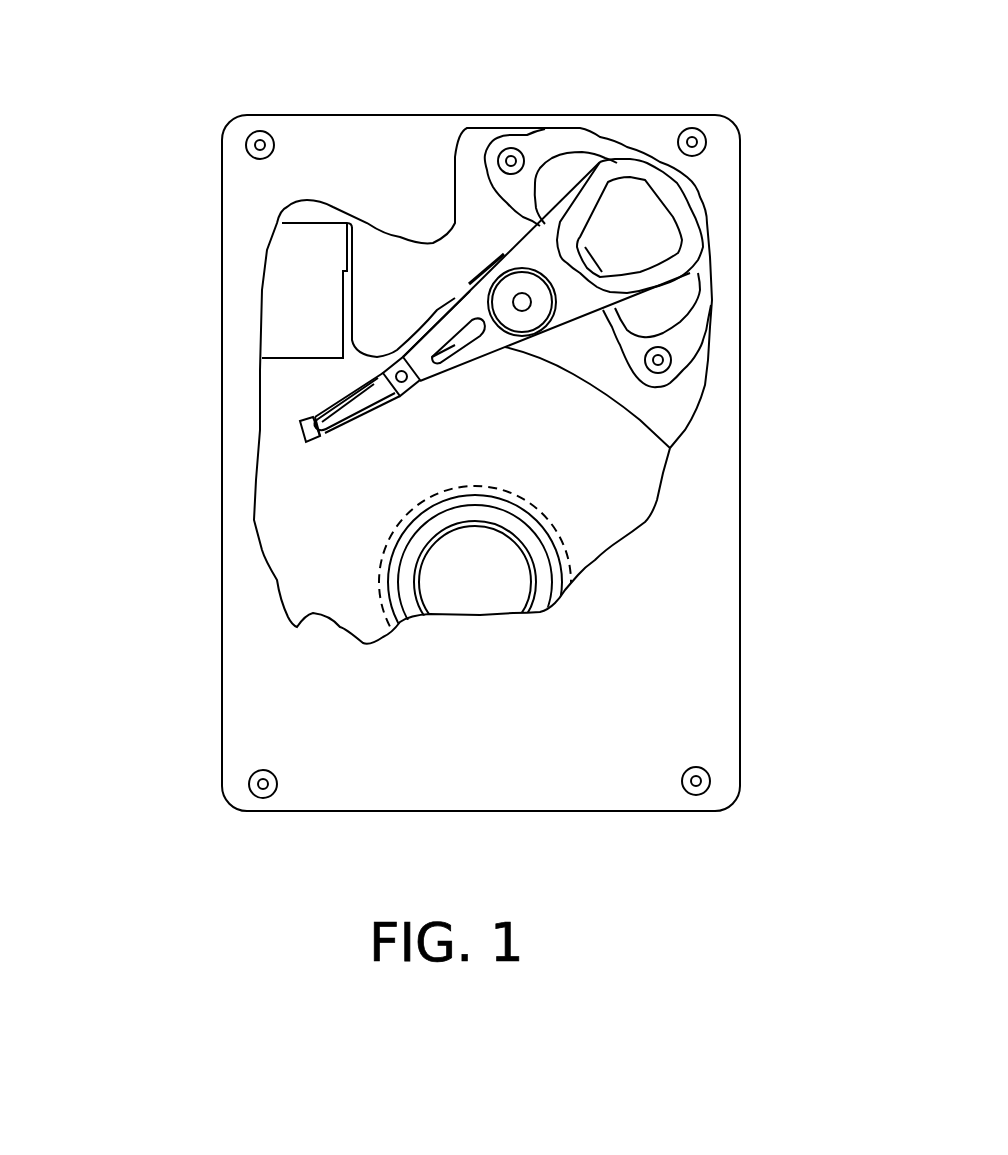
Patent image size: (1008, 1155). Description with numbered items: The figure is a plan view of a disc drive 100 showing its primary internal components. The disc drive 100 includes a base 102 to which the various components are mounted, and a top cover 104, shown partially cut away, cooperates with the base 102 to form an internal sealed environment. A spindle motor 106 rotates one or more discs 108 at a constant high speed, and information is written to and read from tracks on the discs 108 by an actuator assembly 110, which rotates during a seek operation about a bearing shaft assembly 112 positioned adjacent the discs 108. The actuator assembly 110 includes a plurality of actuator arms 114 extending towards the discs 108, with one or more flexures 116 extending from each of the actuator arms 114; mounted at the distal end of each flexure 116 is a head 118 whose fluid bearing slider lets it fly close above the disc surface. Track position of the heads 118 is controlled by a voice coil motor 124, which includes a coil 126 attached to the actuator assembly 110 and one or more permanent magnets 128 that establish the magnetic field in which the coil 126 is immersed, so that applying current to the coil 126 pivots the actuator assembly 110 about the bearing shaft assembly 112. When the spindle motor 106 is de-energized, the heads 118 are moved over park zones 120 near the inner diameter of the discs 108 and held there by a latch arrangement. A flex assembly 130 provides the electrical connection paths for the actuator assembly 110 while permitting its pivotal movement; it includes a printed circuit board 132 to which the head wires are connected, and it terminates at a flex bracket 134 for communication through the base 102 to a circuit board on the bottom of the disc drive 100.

The disc drive 100 is at (178, 96).
The base 102 is at (280, 381).
The top cover 104 is at (277, 690).
The spindle motor 106 is at (473, 585).
The discs 108 is at (612, 517).
The actuator assembly 110 is at (504, 372).
The bearing shaft assembly 112 is at (527, 303).
The actuator arms 114 is at (468, 367).
The flexures 116 is at (333, 413).
The head 118 is at (304, 444).
The park zones 120 is at (378, 587).
The voice coil motor 124 is at (578, 163).
The coil 126 is at (693, 228).
The permanent magnets 128 is at (547, 183).
The flex assembly 130 is at (442, 307).
The printed circuit board 132 is at (495, 268).
The flex bracket 134 is at (295, 282).